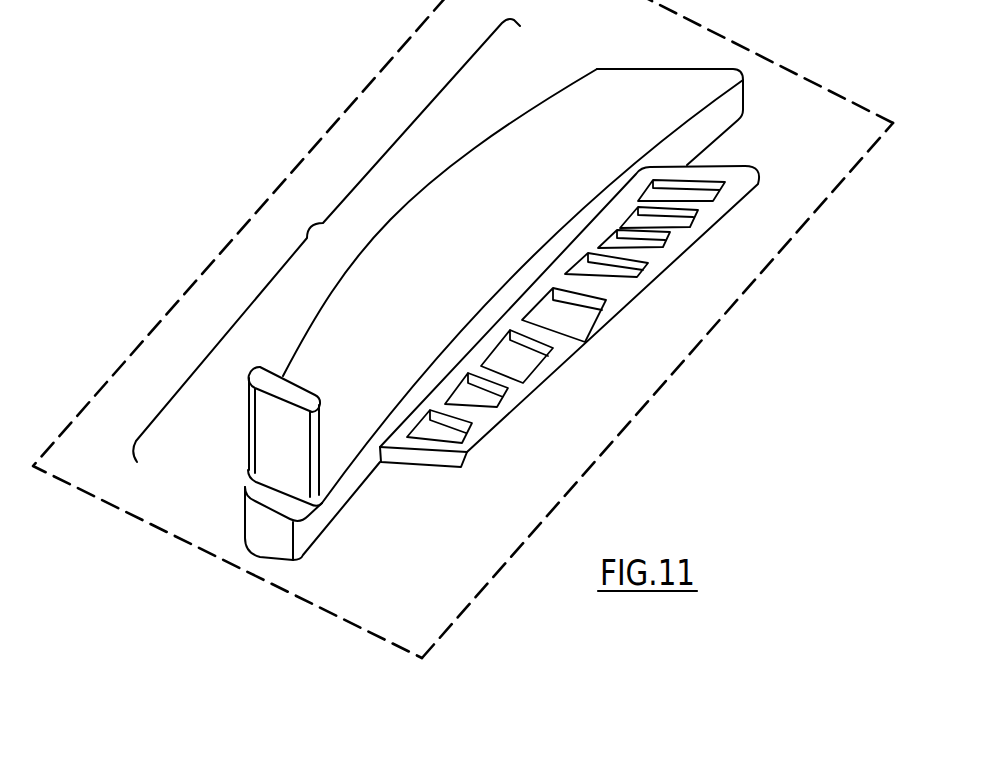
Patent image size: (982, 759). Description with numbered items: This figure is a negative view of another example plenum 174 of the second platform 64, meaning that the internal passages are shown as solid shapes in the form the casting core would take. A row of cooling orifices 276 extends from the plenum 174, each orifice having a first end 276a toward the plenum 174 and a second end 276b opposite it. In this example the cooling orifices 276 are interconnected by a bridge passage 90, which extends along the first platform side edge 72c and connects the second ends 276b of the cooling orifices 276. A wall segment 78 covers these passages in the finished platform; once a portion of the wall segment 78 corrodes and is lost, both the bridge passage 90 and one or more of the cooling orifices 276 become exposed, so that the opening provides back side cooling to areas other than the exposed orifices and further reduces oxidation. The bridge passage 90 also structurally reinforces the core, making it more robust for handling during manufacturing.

The second platform 64 is at (822, 203).
The first platform side edge 72c is at (698, 347).
The plenum 174 is at (307, 223).
The wall segment 78 is at (660, 337).
The bridge passage 90 is at (676, 270).
The cooling orifices 276 is at (580, 284).
The first ends of the cooling orifices 276a is at (610, 226).
The second ends of the cooling orifices 276b is at (468, 428).